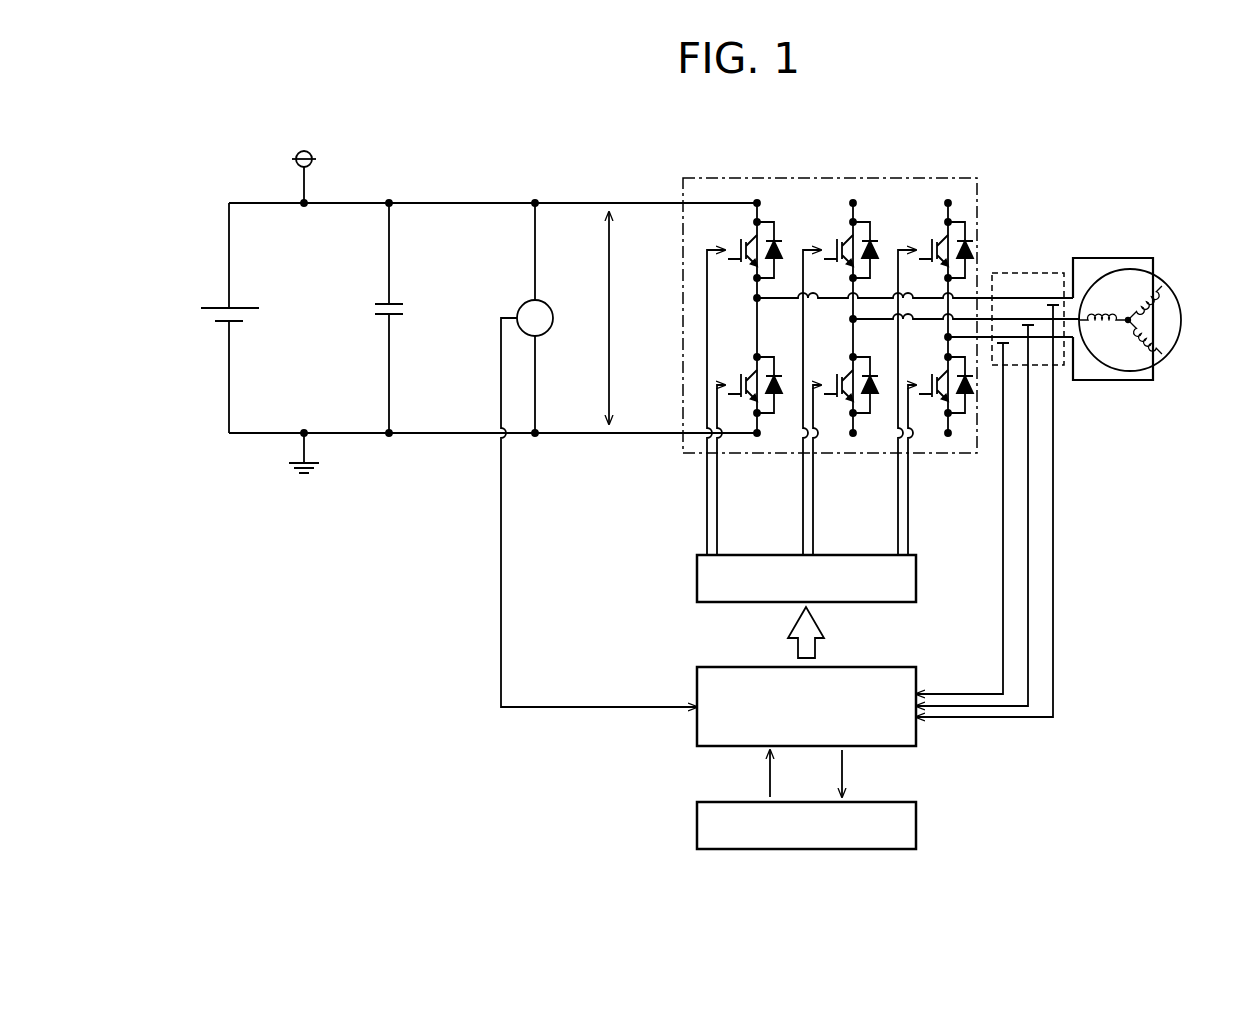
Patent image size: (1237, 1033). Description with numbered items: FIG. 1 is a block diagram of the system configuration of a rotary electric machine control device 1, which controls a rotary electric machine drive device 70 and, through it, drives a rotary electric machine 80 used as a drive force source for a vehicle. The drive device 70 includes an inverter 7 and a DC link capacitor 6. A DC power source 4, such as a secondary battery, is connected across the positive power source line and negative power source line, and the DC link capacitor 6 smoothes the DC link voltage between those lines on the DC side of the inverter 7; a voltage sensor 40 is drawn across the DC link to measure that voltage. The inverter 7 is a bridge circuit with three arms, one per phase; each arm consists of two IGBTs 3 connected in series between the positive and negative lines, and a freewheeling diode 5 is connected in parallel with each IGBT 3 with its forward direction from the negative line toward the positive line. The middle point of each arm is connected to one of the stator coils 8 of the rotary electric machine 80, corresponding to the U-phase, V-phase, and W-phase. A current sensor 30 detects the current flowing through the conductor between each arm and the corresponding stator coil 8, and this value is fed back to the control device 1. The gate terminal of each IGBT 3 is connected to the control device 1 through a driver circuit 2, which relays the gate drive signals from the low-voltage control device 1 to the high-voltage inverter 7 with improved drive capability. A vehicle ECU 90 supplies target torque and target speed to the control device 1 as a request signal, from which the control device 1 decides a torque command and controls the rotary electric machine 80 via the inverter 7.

The rotary electric machine control device 1 is at (697, 668).
The driver circuit 2 is at (697, 573).
The IGBT 3 is at (738, 283).
The DC power source 4 is at (219, 330).
The freewheeling diode 5 is at (781, 226).
The DC link capacitor 6 is at (375, 310).
The inverter 7 is at (978, 183).
The stator coil 8 is at (1152, 333).
The current sensor 30 is at (1015, 270).
The voltage sensor 40 is at (527, 302).
The rotary electric machine drive device 70 is at (478, 160).
The rotary electric machine 80 is at (1170, 276).
The vehicle ECU 90 is at (717, 802).